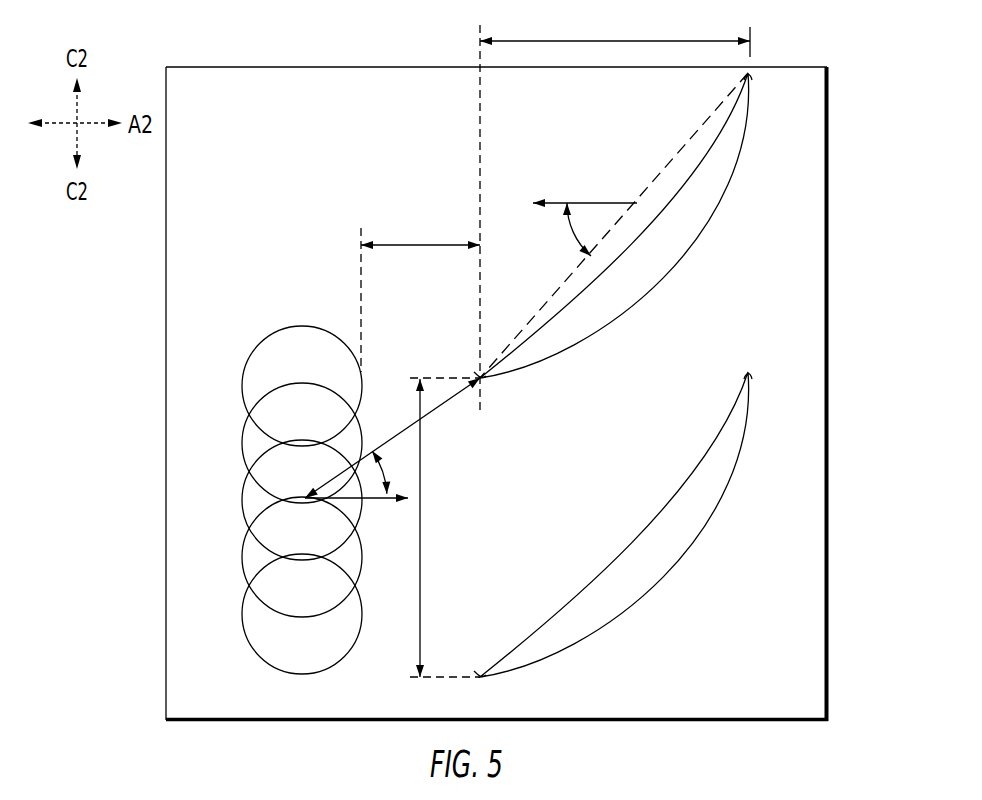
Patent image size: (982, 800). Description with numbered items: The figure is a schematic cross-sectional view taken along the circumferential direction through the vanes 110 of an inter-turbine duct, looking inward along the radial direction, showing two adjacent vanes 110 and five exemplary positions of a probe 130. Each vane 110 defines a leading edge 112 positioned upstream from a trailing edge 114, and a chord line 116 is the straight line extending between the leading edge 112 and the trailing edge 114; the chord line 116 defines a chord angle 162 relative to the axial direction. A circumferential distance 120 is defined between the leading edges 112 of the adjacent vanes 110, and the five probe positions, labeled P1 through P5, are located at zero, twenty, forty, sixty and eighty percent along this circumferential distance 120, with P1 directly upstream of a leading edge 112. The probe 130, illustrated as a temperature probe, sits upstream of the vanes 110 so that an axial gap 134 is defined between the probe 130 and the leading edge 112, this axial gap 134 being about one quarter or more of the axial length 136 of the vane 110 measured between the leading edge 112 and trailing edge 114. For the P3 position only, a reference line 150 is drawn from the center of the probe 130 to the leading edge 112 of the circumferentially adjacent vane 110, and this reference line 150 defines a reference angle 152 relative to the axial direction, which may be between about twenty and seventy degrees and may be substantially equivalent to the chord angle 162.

The vane 110 is at (683, 262).
The leading edge 112 is at (476, 402).
The trailing edge 114 is at (756, 67).
The chord line 116 is at (667, 167).
The circumferential distance 120 is at (421, 582).
The probe 130 is at (247, 364).
The axial gap 134 is at (425, 245).
The axial length 136 is at (615, 41).
The reference line 150 is at (405, 425).
The reference angle 152 is at (378, 480).
The chord angle 162 is at (578, 230).